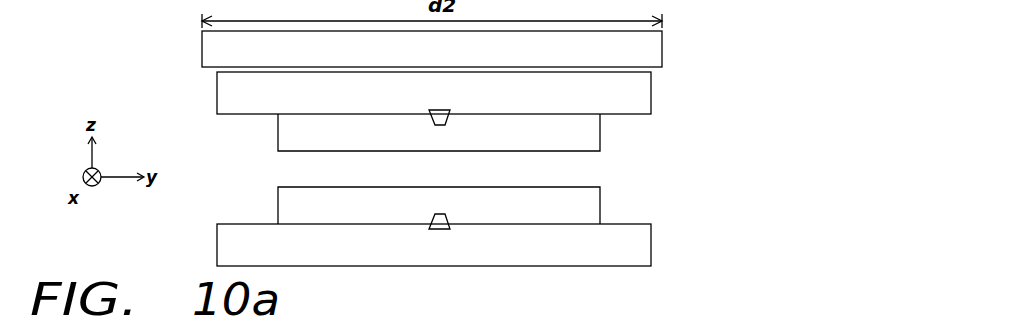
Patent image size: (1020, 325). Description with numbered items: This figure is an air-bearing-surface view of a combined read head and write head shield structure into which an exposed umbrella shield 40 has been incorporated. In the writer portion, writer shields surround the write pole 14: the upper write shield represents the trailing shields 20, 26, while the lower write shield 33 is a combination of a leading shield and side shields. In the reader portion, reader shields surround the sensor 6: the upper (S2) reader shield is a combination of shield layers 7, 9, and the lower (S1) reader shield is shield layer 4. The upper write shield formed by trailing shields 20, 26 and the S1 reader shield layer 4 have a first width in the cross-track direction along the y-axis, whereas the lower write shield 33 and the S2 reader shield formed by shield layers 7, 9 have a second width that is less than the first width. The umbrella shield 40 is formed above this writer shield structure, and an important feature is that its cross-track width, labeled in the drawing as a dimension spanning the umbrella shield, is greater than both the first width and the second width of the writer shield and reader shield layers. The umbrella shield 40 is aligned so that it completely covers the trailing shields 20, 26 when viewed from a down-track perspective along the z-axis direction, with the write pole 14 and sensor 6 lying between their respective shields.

The umbrella shield 40 is at (652, 47).
The trailing shield 20 is at (454, 93).
The trailing shield 26 is at (232, 92).
The lower write shield 33 is at (300, 140).
The write pole 14 is at (441, 124).
The sensor 6 is at (440, 214).
The shield layer 7 is at (379, 205).
The shield layer 9 is at (300, 203).
The shield layer 4 is at (232, 245).